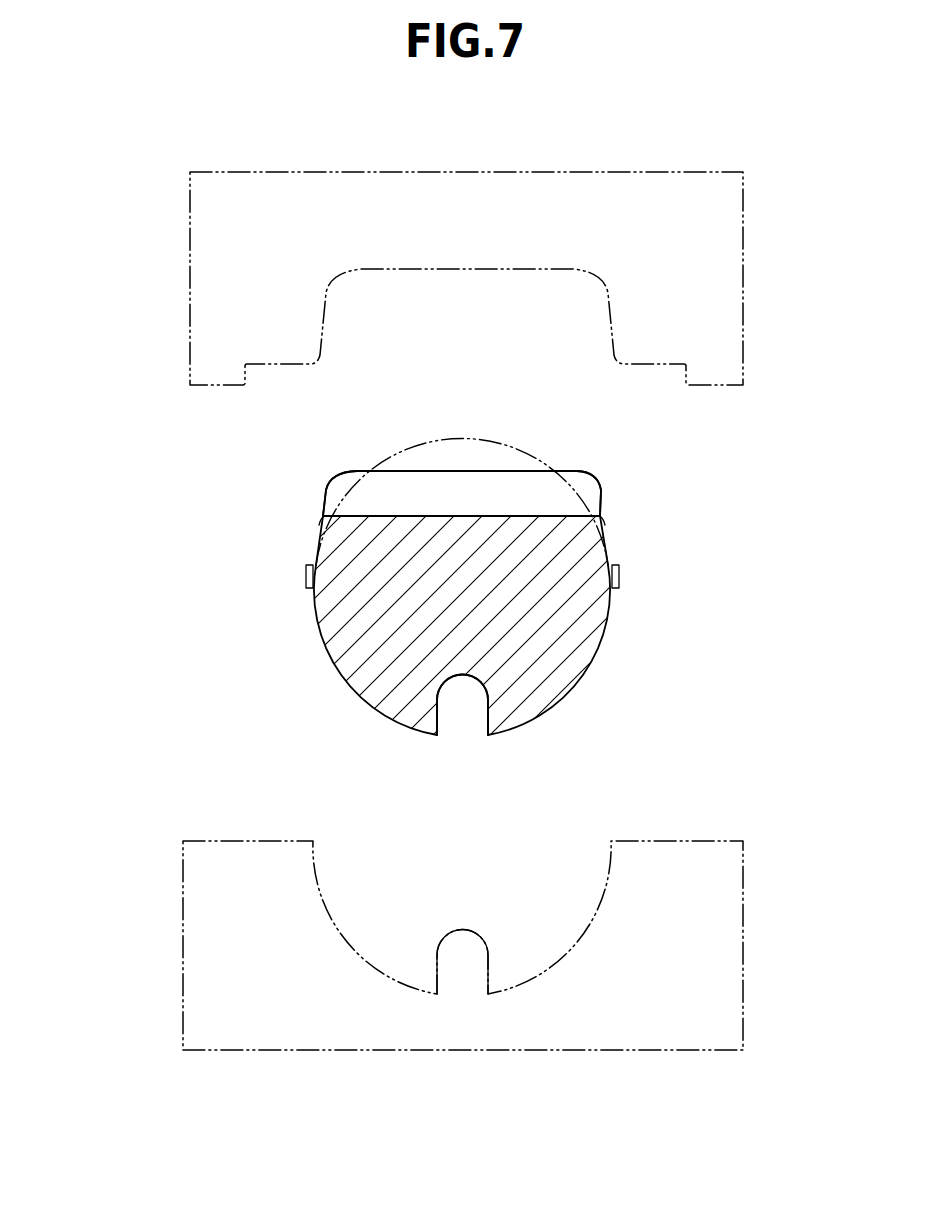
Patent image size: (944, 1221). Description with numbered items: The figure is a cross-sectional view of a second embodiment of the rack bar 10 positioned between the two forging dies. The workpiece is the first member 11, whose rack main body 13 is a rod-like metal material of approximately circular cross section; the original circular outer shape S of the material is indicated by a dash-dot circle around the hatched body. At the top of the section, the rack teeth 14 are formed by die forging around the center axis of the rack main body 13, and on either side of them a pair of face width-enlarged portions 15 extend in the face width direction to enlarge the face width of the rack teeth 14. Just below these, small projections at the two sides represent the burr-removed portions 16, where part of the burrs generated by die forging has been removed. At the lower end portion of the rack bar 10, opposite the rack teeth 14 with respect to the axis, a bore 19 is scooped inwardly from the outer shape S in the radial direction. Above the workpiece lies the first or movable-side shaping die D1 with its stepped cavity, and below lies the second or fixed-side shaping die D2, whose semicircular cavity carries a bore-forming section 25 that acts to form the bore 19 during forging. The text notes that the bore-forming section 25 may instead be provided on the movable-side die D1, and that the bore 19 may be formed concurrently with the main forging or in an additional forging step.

The rack bar 10 is at (469, 579).
The first member 11 is at (469, 579).
The rack main body 13 is at (376, 688).
The rack teeth 14 is at (463, 492).
The face width-enlarged portions 15 is at (341, 488).
The burr-removed portions 16 is at (311, 566).
The bore 19 is at (455, 712).
The bore-forming section 25 is at (463, 930).
The outer shape S is at (516, 446).
The first or movable-side shaping die D1 is at (190, 310).
The second or fixed-side shaping die D2 is at (181, 873).